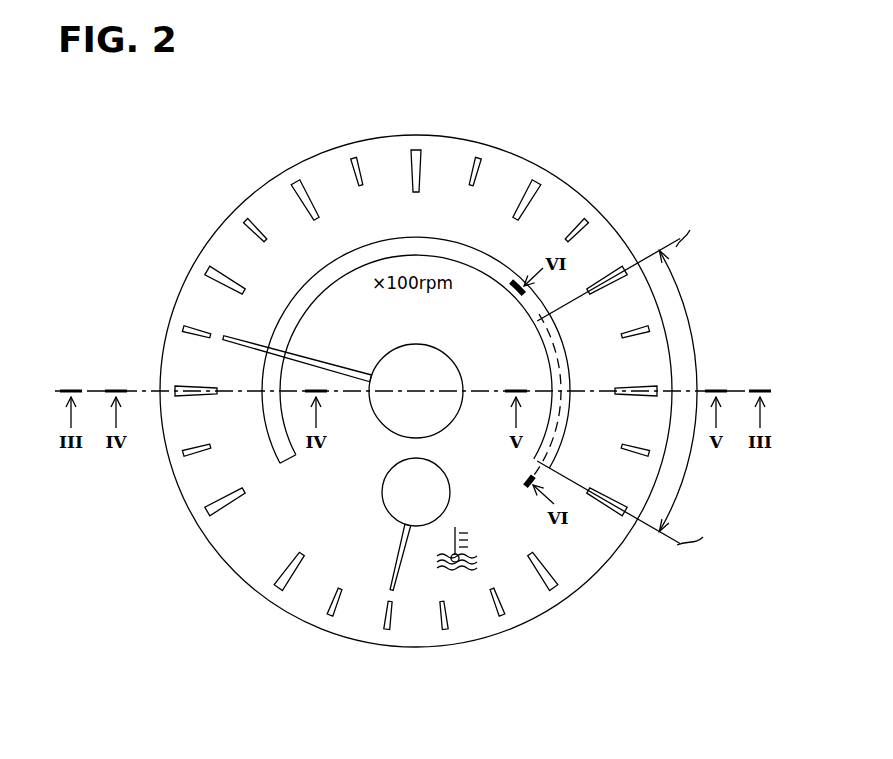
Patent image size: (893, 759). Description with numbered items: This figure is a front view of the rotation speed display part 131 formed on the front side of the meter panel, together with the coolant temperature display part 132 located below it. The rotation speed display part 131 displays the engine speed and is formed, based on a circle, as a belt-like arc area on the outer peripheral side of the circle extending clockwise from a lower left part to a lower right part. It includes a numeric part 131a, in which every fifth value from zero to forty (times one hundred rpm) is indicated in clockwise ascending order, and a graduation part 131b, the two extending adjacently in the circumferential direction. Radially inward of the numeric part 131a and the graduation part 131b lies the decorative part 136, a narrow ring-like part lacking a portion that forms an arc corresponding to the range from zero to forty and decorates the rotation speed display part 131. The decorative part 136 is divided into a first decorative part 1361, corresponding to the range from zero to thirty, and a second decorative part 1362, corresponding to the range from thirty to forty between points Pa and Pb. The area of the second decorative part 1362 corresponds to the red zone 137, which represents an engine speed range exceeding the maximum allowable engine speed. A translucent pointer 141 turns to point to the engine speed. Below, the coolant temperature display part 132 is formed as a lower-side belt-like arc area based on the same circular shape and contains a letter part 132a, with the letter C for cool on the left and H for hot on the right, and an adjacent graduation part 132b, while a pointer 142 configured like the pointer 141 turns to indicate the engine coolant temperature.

The rotation speed display part 131 is at (256, 190).
The numeric part 131a is at (331, 222).
The graduation part 131b is at (308, 188).
The decorative part 136 is at (469, 245).
The first decorative part 1361 is at (507, 275).
The second decorative part 1362 is at (708, 391).
The red zone 137 is at (690, 320).
The pointer 141 is at (337, 366).
The pointer 142 is at (398, 553).
The coolant temperature display part 132 is at (355, 612).
The letter part 132a is at (562, 578).
The graduation part 132b is at (446, 633).